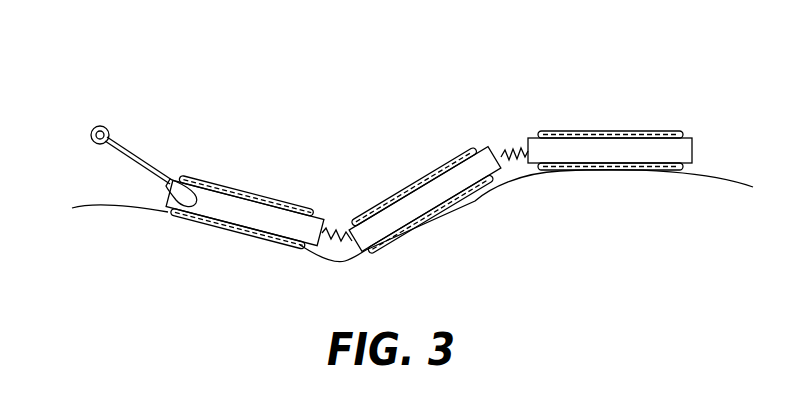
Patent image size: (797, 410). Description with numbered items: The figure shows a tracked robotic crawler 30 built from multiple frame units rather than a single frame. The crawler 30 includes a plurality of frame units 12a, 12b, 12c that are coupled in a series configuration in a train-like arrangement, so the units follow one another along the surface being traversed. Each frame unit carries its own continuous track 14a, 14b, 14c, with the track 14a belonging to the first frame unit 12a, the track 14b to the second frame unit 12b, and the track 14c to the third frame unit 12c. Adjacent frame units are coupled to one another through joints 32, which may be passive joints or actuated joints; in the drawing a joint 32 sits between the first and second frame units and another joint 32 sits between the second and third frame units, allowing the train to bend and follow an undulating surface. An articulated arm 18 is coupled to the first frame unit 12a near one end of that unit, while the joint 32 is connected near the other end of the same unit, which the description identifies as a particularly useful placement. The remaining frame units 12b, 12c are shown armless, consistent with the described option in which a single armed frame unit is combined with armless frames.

The tracked robotic crawler 30 is at (108, 48).
The articulated arm 18 is at (132, 160).
The frame unit 12a is at (222, 204).
The continuous track 14a is at (245, 236).
The frame unit 12b is at (428, 195).
The continuous track 14b is at (390, 200).
The frame unit 12c is at (570, 148).
The continuous track 14c is at (642, 132).
The joint 32 is at (348, 238).